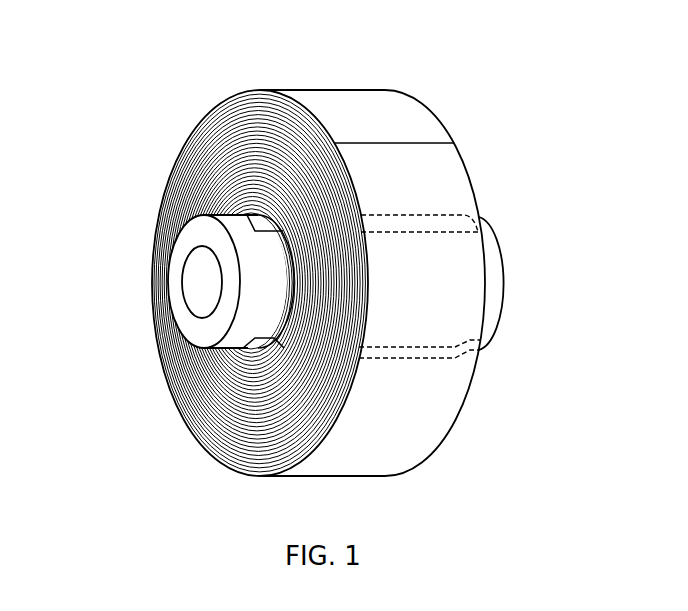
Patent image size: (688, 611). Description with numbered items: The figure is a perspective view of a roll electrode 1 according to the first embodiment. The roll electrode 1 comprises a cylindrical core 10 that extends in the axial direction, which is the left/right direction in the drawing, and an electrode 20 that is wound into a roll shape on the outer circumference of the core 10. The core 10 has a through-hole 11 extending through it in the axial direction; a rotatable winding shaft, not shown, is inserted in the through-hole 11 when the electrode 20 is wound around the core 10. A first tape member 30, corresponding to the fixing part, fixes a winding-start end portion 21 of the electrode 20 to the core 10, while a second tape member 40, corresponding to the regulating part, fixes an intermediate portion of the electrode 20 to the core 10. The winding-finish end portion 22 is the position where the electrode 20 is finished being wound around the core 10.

The roll electrode 1 is at (97, 38).
The core 10 is at (204, 281).
The through-hole 11 is at (197, 258).
The electrode 20 is at (462, 170).
The winding-start end portion 21 is at (452, 236).
The winding-finish end portion 22 is at (437, 141).
The first tape member 30 is at (258, 216).
The second tape member 40 is at (262, 346).